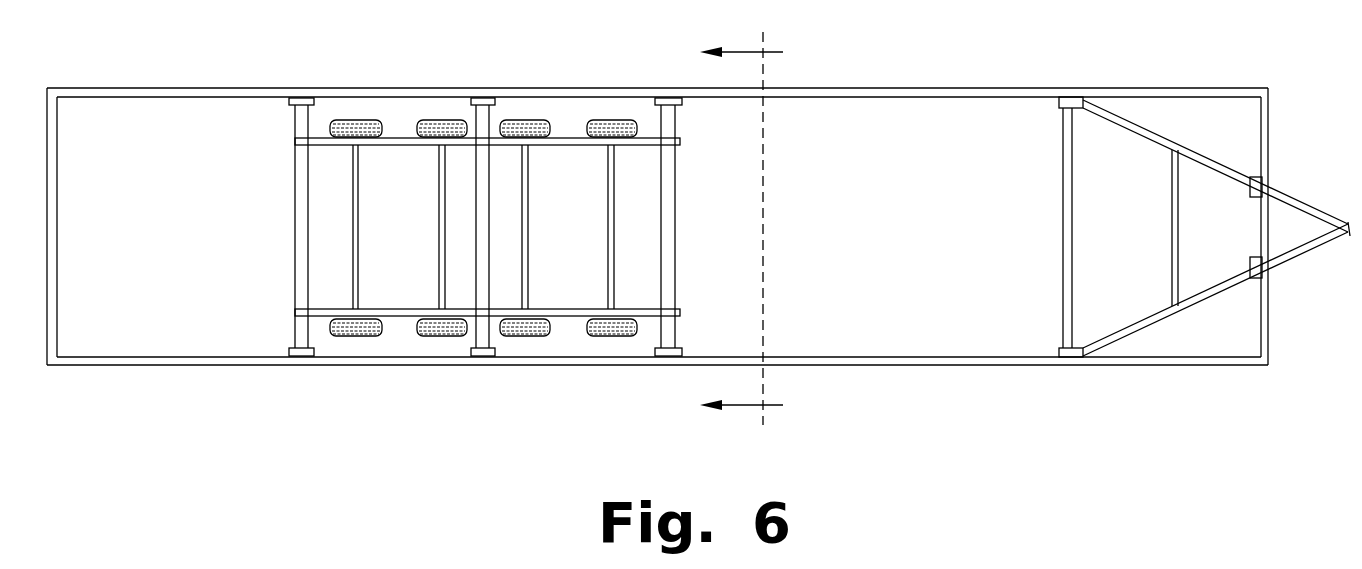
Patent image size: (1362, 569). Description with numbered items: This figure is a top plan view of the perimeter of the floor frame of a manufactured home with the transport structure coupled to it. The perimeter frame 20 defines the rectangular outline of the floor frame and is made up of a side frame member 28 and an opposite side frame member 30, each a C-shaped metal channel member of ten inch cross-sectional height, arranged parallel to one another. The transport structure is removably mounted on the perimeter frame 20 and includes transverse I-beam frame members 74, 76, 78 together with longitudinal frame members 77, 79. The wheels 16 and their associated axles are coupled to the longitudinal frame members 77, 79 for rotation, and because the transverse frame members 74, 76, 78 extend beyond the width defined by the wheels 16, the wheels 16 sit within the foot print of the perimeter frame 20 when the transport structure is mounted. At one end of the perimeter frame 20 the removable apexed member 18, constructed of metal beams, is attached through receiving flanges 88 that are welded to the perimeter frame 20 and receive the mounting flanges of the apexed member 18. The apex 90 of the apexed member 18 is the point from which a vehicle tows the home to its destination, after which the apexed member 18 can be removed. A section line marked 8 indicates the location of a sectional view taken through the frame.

The section line 8- 8 is at (742, 229).
The wheels 16 is at (399, 88).
The apexed member 18 is at (1297, 199).
The perimeter frame 20 is at (824, 84).
The side frame member 28 is at (883, 366).
The opposite side frame member 30 is at (952, 90).
The transverse I-beam frame member 74 is at (680, 219).
The transverse I-beam frame member 76 is at (480, 197).
The longitudinal frame member 77 is at (560, 310).
The transverse I-beam frame member 78 is at (297, 228).
The longitudinal frame member 79 is at (560, 146).
The receiving flanges 88 is at (1073, 104).
The apex 90 is at (1351, 223).